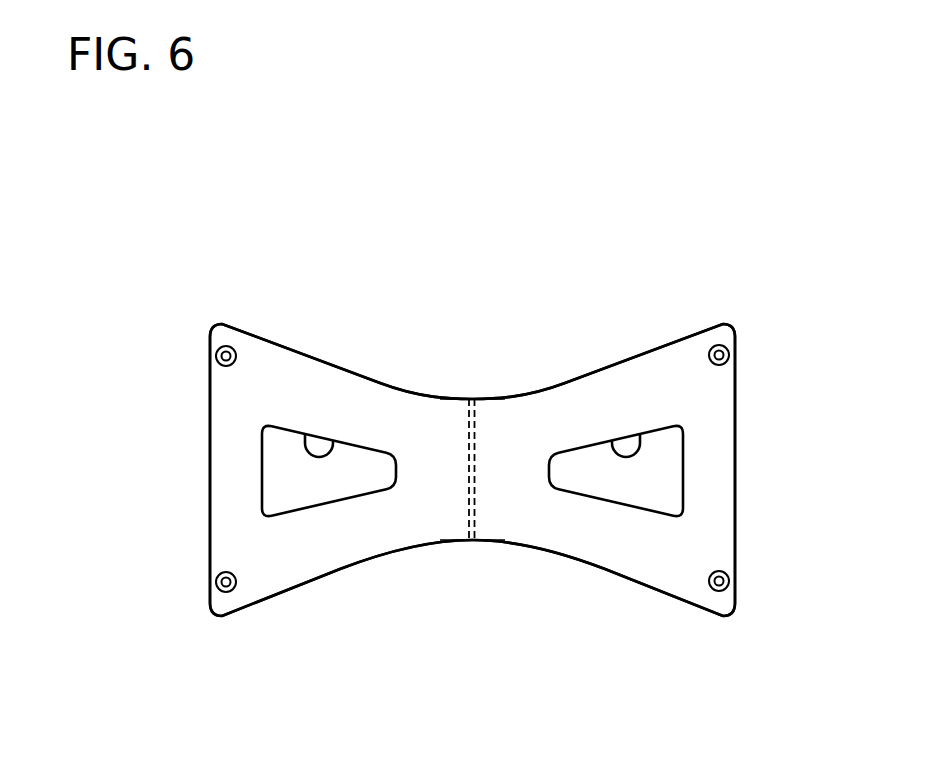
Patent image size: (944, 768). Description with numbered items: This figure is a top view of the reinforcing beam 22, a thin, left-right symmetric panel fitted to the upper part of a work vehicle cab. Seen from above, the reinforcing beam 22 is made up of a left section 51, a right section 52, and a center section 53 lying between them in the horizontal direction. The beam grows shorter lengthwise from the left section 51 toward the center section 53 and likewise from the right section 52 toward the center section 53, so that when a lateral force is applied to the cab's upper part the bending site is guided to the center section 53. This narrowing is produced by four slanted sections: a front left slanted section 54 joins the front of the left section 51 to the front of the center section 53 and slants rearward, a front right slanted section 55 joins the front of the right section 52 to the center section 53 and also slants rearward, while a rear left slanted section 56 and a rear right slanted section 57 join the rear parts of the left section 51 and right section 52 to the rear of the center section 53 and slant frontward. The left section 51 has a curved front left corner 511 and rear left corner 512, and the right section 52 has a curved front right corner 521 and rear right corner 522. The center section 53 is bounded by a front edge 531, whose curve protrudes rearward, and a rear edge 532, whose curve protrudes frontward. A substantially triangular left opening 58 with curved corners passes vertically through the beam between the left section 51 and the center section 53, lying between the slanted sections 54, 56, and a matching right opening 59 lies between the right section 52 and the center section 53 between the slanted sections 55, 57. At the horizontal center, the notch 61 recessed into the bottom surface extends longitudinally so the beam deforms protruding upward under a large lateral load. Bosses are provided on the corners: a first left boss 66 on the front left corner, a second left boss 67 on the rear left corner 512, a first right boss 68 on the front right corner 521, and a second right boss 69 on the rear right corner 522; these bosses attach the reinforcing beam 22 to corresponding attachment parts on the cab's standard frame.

The reinforcing beam 22 is at (358, 249).
The left section 51 is at (225, 471).
The right section 52 is at (722, 473).
The front left corner 511 is at (212, 326).
The rear left corner 512 is at (215, 612).
The front right corner 521 is at (727, 327).
The rear right corner 522 is at (727, 612).
The center section 53 is at (492, 412).
The front edge 531 is at (458, 398).
The rear edge 532 is at (456, 541).
The front left slanted section 54 is at (342, 378).
The front right slanted section 55 is at (590, 380).
The rear left slanted section 56 is at (337, 570).
The rear right slanted section 57 is at (627, 570).
The left opening 58 is at (305, 433).
The right opening 59 is at (640, 433).
The notch 61 is at (474, 498).
The first left boss 66 is at (216, 356).
The second left boss 67 is at (216, 582).
The first right boss 68 is at (729, 354).
The second right boss 69 is at (729, 580).